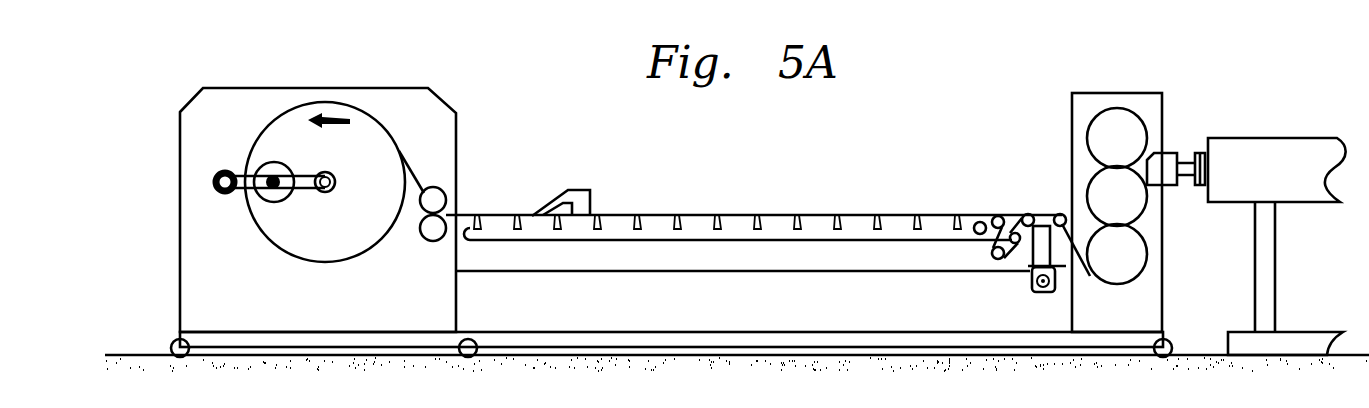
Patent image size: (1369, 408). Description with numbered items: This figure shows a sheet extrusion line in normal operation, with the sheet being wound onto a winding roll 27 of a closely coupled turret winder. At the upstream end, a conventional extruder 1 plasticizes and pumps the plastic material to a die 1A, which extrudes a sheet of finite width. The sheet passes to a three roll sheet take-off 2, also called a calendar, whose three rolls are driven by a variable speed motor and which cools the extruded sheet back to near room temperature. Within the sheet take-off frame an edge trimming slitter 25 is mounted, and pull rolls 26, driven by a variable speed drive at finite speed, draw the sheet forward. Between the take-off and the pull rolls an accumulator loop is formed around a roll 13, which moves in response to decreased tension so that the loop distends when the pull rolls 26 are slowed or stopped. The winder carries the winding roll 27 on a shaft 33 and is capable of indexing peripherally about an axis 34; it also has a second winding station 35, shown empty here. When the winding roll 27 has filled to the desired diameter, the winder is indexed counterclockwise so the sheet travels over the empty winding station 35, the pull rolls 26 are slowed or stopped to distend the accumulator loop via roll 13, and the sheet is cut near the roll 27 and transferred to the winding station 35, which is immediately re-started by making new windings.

The extruder 1 is at (1265, 162).
The die 1A is at (1168, 160).
The three roll sheet take-off 2 is at (1123, 130).
The roll 13 is at (995, 255).
The edge trimming slitter 25 is at (577, 190).
The pull rolls 26 is at (437, 195).
The winding roll 27 is at (368, 125).
The shaft 33 is at (328, 195).
The axis 34 is at (270, 188).
The second winding station 35 is at (222, 176).